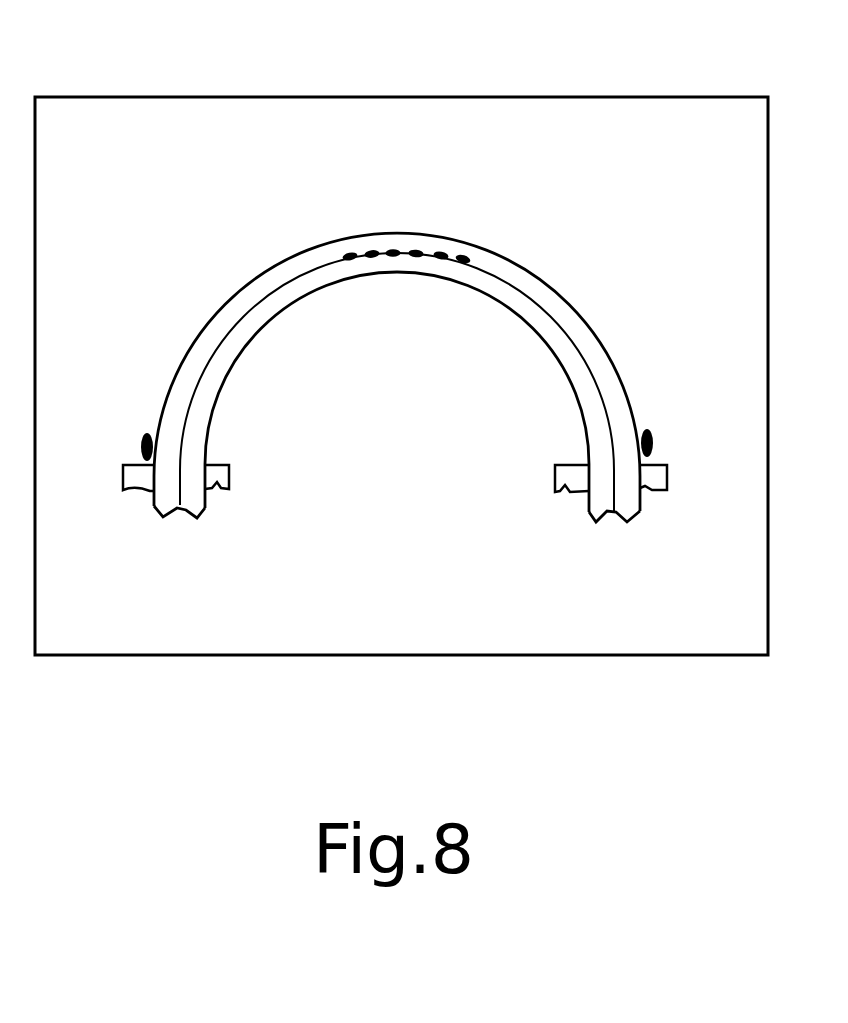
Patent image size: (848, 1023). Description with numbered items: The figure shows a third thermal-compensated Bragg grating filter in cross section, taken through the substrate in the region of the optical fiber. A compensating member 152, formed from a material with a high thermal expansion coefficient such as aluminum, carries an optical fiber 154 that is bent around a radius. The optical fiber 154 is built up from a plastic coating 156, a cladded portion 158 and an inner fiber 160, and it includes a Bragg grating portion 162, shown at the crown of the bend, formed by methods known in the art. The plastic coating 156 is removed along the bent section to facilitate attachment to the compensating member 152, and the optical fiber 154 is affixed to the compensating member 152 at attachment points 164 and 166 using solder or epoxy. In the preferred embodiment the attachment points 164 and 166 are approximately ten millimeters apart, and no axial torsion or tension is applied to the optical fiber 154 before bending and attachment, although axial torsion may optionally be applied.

The compensating member 152 is at (180, 97).
The optical fiber 154 is at (567, 525).
The plastic coating 156 is at (123, 468).
The cladded portion 158 is at (190, 328).
The fiber 160 is at (277, 268).
The Bragg grating portion 162 is at (405, 252).
The attachment point 164 is at (146, 432).
The attachment point 166 is at (655, 432).